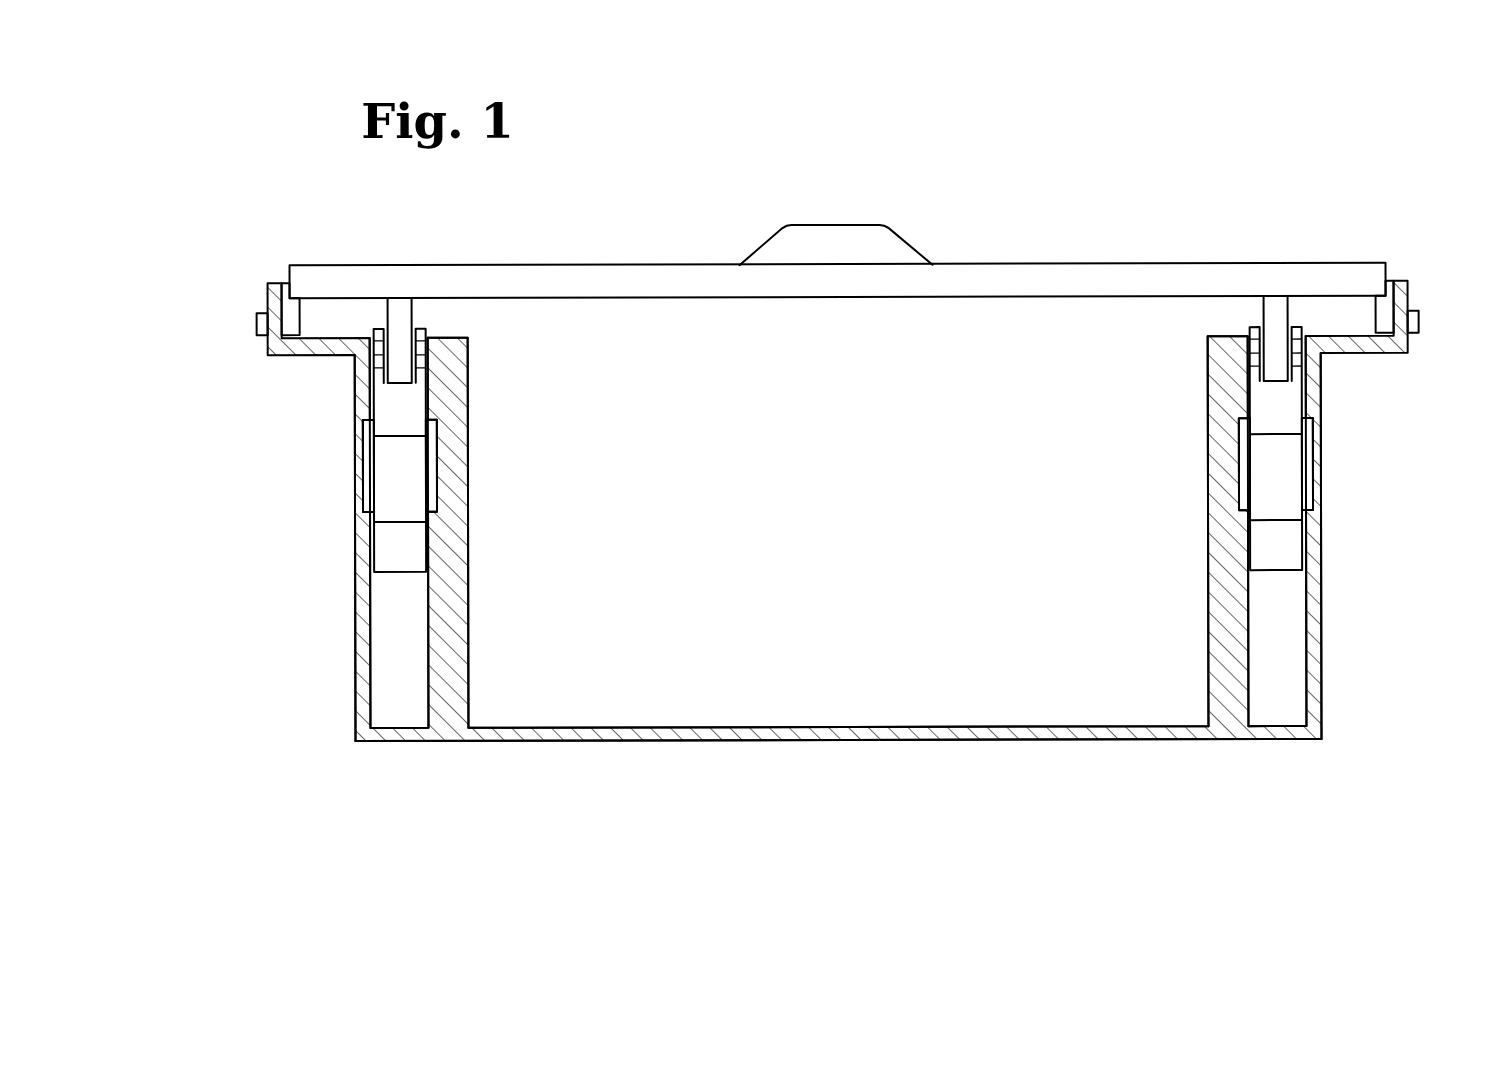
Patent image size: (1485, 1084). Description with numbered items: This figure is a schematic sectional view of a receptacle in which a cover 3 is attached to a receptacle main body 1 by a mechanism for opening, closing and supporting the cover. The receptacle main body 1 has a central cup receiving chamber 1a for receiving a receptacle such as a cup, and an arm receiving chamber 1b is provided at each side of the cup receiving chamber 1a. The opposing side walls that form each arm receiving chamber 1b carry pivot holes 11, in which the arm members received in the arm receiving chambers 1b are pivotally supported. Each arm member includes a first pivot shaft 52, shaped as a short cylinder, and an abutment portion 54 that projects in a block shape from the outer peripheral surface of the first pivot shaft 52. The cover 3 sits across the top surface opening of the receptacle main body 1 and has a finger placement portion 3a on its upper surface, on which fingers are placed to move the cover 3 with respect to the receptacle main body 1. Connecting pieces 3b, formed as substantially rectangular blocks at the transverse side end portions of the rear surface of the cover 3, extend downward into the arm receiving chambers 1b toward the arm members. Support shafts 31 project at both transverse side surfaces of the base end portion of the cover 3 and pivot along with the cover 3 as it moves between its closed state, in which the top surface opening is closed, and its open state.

The receptacle main body 1 is at (1240, 741).
The cup receiving chamber 1a is at (1123, 708).
The arm receiving chamber 1b is at (393, 657).
The cover 3 is at (1105, 265).
The finger placement portion 3a is at (772, 228).
The connecting piece 3b is at (413, 315).
The pivot hole 11 is at (437, 426).
The support shaft 31 is at (256, 330).
The first pivot shaft 52 is at (368, 472).
The abutment portion 54 is at (393, 402).